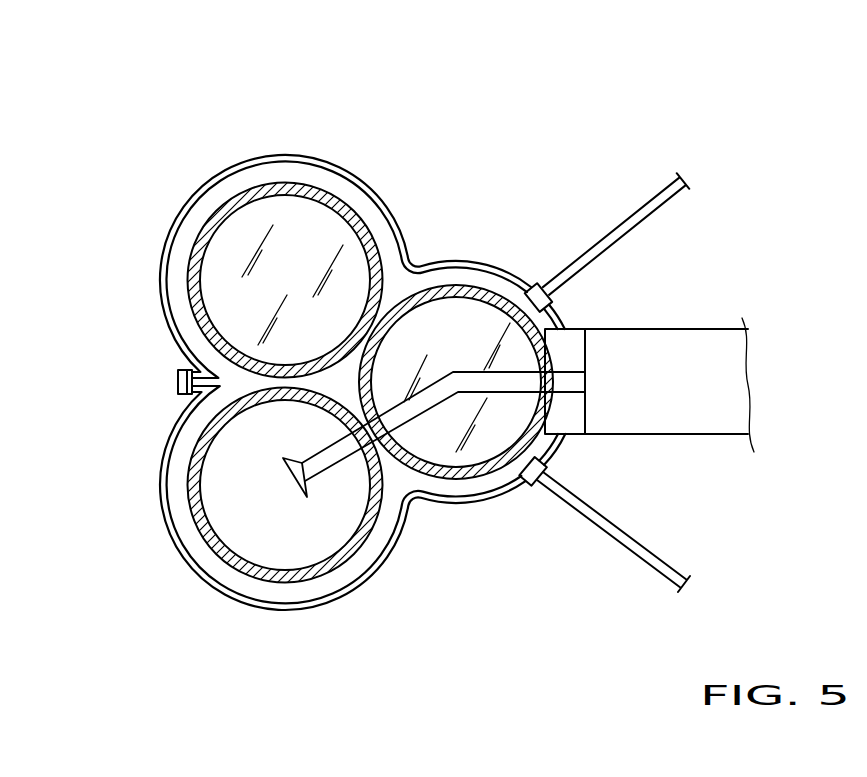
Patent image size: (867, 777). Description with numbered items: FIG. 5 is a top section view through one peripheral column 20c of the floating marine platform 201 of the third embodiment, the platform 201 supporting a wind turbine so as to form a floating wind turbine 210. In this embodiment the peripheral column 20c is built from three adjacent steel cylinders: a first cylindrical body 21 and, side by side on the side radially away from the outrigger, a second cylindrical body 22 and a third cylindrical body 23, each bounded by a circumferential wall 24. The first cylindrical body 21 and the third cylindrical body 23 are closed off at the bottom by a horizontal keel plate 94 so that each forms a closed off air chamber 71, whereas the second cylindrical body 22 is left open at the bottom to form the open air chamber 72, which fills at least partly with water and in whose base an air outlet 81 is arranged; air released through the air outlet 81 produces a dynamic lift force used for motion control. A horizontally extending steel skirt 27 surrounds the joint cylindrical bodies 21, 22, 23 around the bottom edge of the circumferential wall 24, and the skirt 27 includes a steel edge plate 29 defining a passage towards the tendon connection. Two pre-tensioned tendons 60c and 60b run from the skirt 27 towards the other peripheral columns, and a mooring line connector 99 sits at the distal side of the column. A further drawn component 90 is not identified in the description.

The floating wind turbine 210 is at (578, 108).
The peripheral column 20c is at (300, 157).
The first cylindrical body 21 is at (478, 284).
The third cylindrical body 23 is at (248, 218).
The keel plate 94 is at (443, 307).
The outer wall 90 is at (175, 220).
The circumferential wall 24 is at (193, 303).
The mooring line connector 99 is at (178, 383).
The edge plate 29 is at (165, 516).
The second cylindrical body 22 is at (212, 565).
The air outlet 81 is at (297, 482).
The skirt 27 is at (462, 507).
The tendon 60c is at (615, 238).
The tendon 60b is at (606, 518).
The floating marine platform 201 is at (697, 335).
The closed off air chamber 71 is at (270, 285).
The open air chamber 72 is at (230, 472).